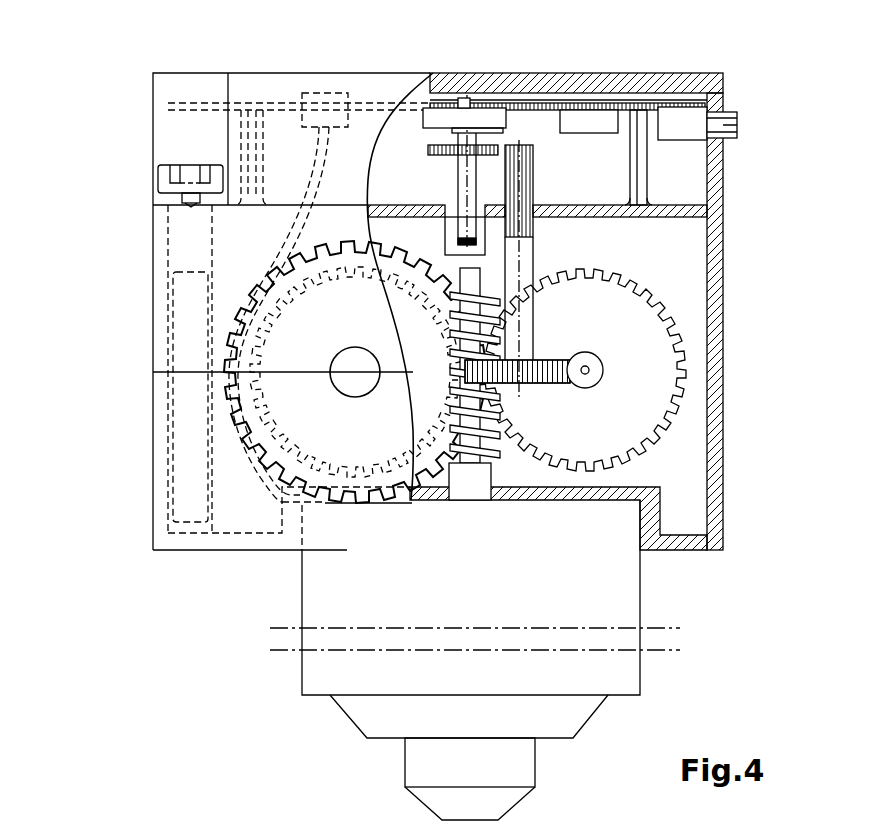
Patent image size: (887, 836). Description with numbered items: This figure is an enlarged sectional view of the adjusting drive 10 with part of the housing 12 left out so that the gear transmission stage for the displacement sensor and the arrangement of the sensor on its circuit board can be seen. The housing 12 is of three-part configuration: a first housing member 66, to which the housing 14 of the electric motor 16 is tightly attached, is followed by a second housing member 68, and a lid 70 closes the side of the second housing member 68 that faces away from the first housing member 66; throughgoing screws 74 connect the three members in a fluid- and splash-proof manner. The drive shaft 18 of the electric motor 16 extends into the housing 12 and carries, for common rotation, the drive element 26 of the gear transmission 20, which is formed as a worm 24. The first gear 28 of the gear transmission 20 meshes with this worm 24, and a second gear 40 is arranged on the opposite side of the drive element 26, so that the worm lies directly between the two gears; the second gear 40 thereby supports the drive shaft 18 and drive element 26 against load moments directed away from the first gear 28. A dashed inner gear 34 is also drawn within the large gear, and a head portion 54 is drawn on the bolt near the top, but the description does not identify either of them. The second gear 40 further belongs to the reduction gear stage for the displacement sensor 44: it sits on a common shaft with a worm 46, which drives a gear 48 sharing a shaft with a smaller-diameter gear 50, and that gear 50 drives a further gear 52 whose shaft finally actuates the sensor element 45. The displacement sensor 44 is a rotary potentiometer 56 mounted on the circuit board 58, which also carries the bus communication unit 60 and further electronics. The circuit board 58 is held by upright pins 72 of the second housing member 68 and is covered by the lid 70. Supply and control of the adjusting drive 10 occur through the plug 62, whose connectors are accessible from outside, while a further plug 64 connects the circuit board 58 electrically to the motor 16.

The adjusting drive 10 is at (446, 410).
The housing 12 is at (117, 451).
The housing of the electric motor 14 is at (605, 673).
The electric motor 16 is at (721, 616).
The drive shaft 18 is at (470, 463).
The gear transmission 20 is at (264, 456).
The worm 24 is at (488, 302).
The drive element 26 is at (430, 519).
The first gear 28 is at (232, 348).
The inner gear 34 is at (297, 400).
The second gear 40 is at (633, 410).
The displacement sensor 44 is at (588, 118).
The sensor element 45 is at (490, 132).
The worm 46 is at (592, 371).
The gear 48 is at (552, 385).
The smaller-diameter gear 50 is at (545, 208).
The further gear 52 is at (460, 138).
The bolt head 54 is at (447, 130).
The rotary potentiometer 56 is at (478, 118).
The circuit board 58 is at (533, 107).
The bus communication unit 60 is at (520, 122).
The plug 62 is at (730, 124).
The further plug 64 is at (323, 93).
The first housing member 66 is at (722, 545).
The second housing member 68 is at (718, 290).
The lid 70 is at (285, 152).
The upright pins 72 is at (240, 132).
The throughgoing screws 74 is at (193, 250).